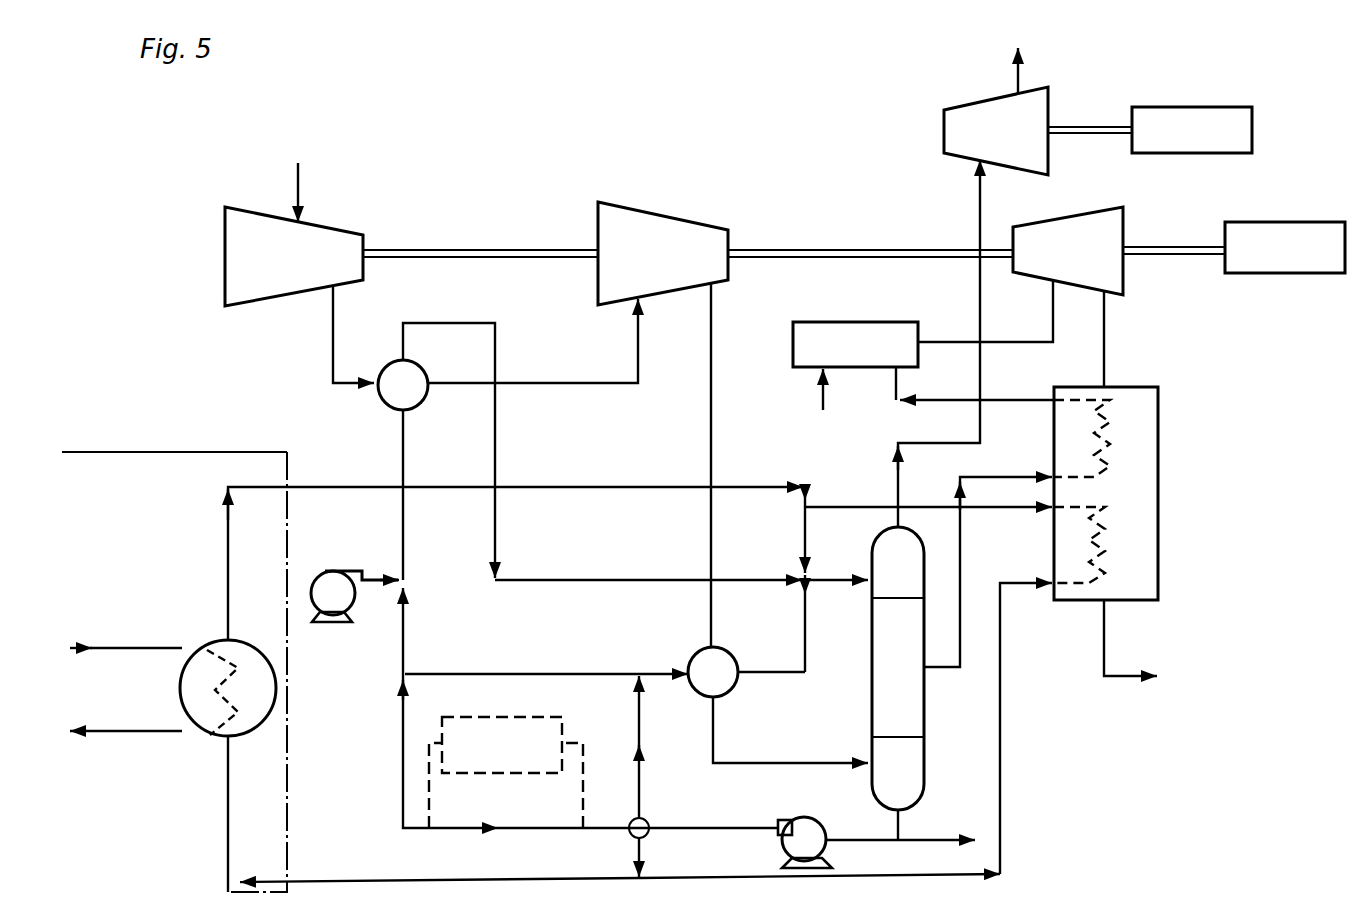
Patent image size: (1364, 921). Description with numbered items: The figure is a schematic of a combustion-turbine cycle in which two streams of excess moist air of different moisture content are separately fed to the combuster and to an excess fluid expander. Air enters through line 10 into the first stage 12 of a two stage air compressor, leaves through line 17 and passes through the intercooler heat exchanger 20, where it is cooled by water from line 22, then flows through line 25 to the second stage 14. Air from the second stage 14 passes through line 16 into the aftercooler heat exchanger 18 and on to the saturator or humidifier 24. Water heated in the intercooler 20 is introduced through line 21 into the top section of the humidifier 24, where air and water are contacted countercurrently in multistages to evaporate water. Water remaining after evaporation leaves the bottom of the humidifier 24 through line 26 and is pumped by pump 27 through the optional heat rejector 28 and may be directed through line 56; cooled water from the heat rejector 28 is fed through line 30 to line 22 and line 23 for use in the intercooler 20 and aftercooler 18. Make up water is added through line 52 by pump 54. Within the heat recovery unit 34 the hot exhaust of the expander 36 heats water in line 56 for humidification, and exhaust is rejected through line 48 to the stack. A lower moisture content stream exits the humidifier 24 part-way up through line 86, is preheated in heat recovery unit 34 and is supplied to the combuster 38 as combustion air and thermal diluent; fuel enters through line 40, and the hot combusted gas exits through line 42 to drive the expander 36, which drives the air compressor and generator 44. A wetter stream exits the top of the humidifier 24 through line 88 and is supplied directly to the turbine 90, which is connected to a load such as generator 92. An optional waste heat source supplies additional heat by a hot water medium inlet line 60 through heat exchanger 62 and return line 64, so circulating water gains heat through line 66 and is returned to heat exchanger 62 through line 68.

The line 10 is at (302, 183).
The first stage 12 is at (225, 236).
The second stage 14 is at (645, 212).
The line 16 is at (713, 342).
The line 17 is at (333, 318).
The heat exchanger 18 is at (733, 657).
The heat exchanger 20 is at (396, 362).
The line 21 is at (580, 580).
The line 22 is at (406, 516).
The line 23 is at (545, 674).
The saturator 24 is at (872, 686).
The line 25 is at (638, 340).
The line 26 is at (905, 818).
The pump 27 is at (790, 820).
The heat exchanger 28 is at (527, 717).
The line 30 is at (403, 755).
The heat recovery unit 34 is at (1159, 513).
The expander 36 is at (1102, 207).
The combuster 38 is at (897, 322).
The line 40 is at (820, 392).
The line 42 is at (1022, 342).
The generator 44 is at (1315, 222).
The line 48 is at (1103, 631).
The line 52 is at (365, 576).
The pump 54 is at (350, 612).
The line 56 is at (852, 507).
The hot water medium inlet line 60 is at (168, 648).
The heat exchanger 62 is at (233, 640).
The return line 64 is at (158, 732).
The line 66 is at (362, 485).
The line 68 is at (330, 880).
The line 86 is at (1028, 477).
The line 88 is at (978, 196).
The turbine 90 is at (975, 103).
The generator 92 is at (1210, 107).